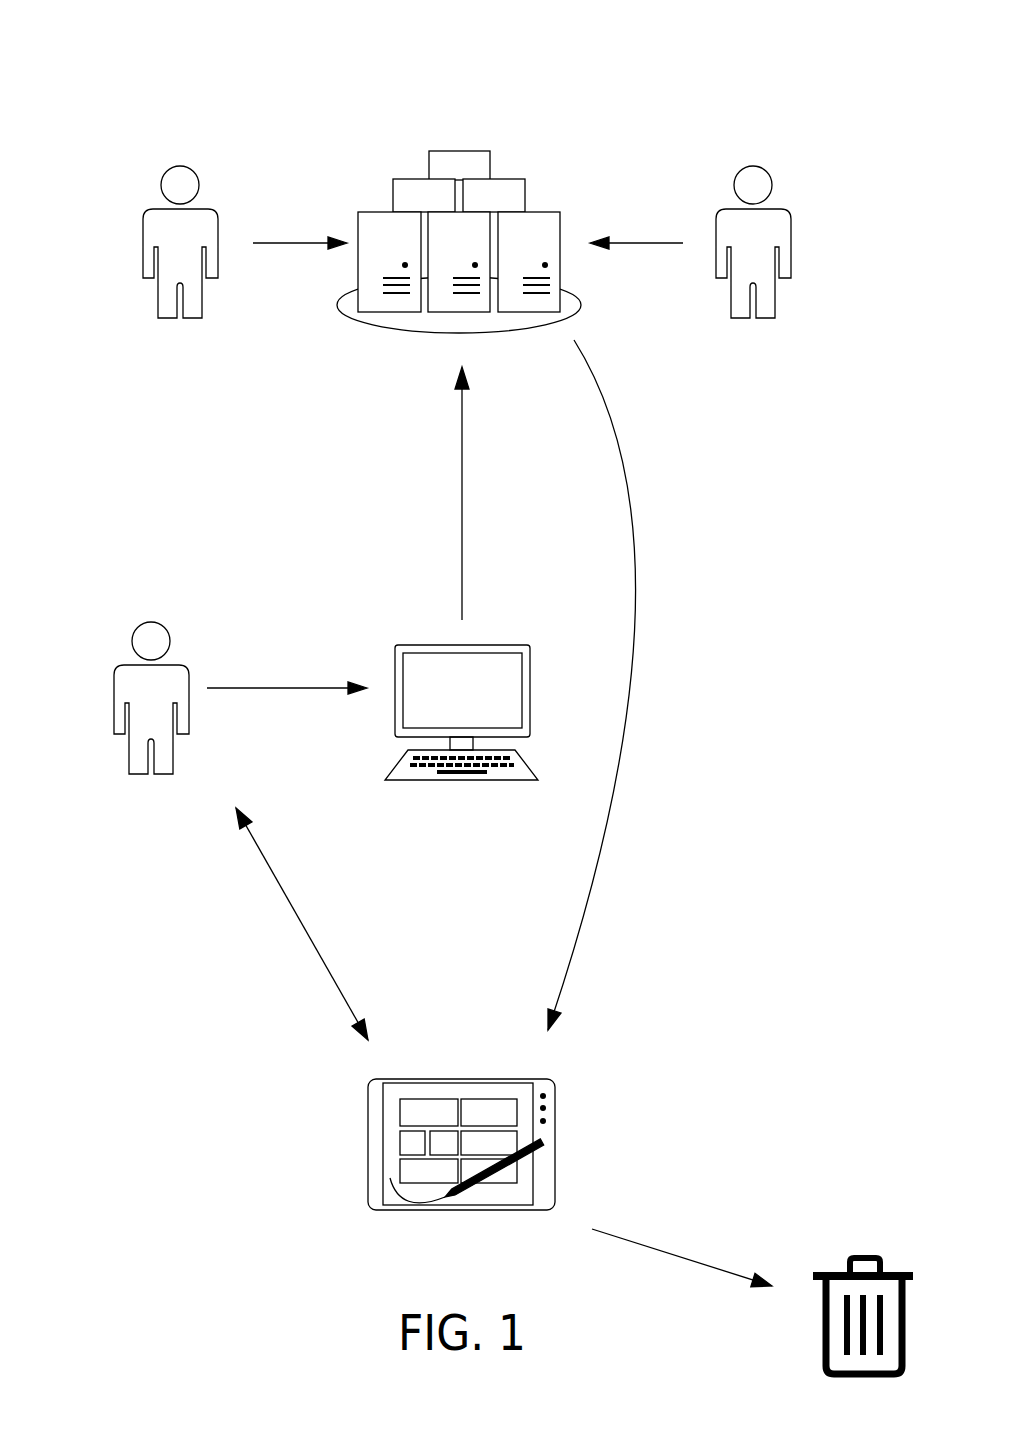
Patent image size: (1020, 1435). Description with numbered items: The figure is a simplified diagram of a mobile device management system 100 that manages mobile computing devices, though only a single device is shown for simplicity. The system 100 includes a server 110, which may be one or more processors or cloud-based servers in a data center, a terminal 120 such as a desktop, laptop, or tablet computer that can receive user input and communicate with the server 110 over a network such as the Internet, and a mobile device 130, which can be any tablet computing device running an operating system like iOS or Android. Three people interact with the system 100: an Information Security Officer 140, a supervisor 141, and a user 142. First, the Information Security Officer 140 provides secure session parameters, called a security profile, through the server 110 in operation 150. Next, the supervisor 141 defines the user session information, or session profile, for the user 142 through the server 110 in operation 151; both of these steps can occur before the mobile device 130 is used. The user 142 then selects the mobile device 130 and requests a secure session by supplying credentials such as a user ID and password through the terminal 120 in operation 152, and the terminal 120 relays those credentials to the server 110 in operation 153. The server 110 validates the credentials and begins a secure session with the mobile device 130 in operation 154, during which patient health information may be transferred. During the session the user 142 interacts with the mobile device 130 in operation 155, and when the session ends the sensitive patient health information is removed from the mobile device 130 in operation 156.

The mobile device management system 100 is at (842, 65).
The server 110 is at (490, 155).
The terminal 120 is at (440, 697).
The mobile device 130 is at (553, 1095).
The Information Security Officer 140 is at (170, 318).
The supervisor 141 is at (737, 318).
The user 142 is at (133, 774).
The operation of providing secure session parameters 150 is at (293, 242).
The operation of defining user session information 151 is at (648, 242).
The operation of requesting a secure session 152 is at (262, 687).
The operation of relaying user credentials 153 is at (462, 533).
The operation of beginning a secure session 154 is at (632, 530).
The operation of interacting with the mobile device 155 is at (307, 940).
The operation of removing patient health information 156 is at (697, 1260).